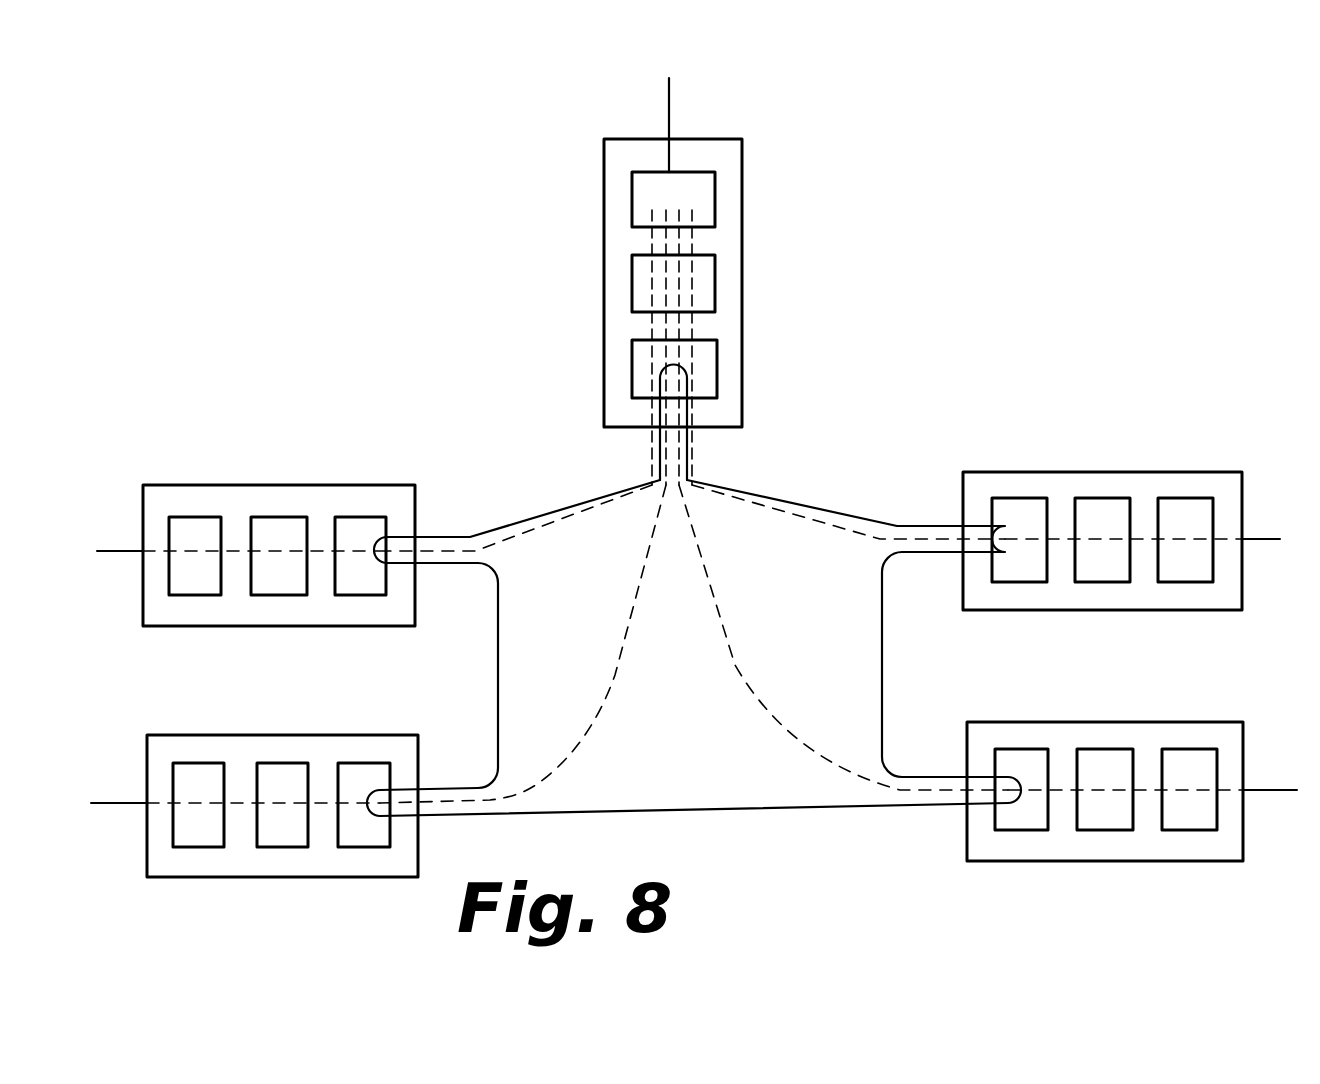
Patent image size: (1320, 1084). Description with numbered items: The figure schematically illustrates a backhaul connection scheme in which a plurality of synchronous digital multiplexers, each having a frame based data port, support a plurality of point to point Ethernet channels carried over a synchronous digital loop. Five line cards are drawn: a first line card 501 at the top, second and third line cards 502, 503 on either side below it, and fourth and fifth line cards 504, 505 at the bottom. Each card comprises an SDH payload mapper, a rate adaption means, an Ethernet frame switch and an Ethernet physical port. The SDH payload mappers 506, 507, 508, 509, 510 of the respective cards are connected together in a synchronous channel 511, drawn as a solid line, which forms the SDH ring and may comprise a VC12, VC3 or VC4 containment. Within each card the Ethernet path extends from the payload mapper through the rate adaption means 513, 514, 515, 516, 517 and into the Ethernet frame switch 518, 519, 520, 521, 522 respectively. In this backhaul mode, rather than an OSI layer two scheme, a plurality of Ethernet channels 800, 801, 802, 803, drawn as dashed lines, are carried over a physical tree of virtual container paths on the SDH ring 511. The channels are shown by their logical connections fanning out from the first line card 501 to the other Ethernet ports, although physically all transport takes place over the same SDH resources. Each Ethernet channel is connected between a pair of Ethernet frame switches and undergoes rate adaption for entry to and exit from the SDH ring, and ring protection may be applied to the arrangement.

The first line card 501 is at (719, 281).
The second line card 502 is at (256, 540).
The third line card 503 is at (1115, 533).
The fourth line card 504 is at (264, 782).
The fifth line card 505 is at (1126, 766).
The SDH payload mapper 506 is at (710, 372).
The SDH payload mapper 507 is at (366, 588).
The SDH payload mapper 508 is at (1013, 578).
The SDH payload mapper 509 is at (370, 768).
The SDH payload mapper 510 is at (1020, 752).
The synchronous channel 511 is at (502, 587).
The rate adaption means 513 is at (708, 290).
The rate adaption means 514 is at (283, 590).
The rate adaption means 515 is at (1103, 575).
The rate adaption means 516 is at (272, 770).
The rate adaption means 517 is at (1100, 757).
The Ethernet frame switch 518 is at (715, 212).
The Ethernet frame switch 519 is at (197, 592).
The Ethernet frame switch 520 is at (1185, 575).
The Ethernet frame switch 521 is at (198, 768).
The Ethernet frame switch 522 is at (1190, 752).
The Ethernet channel 800 is at (604, 516).
The Ethernet channel 801 is at (620, 668).
The Ethernet channel 802 is at (742, 673).
The Ethernet channel 803 is at (816, 520).